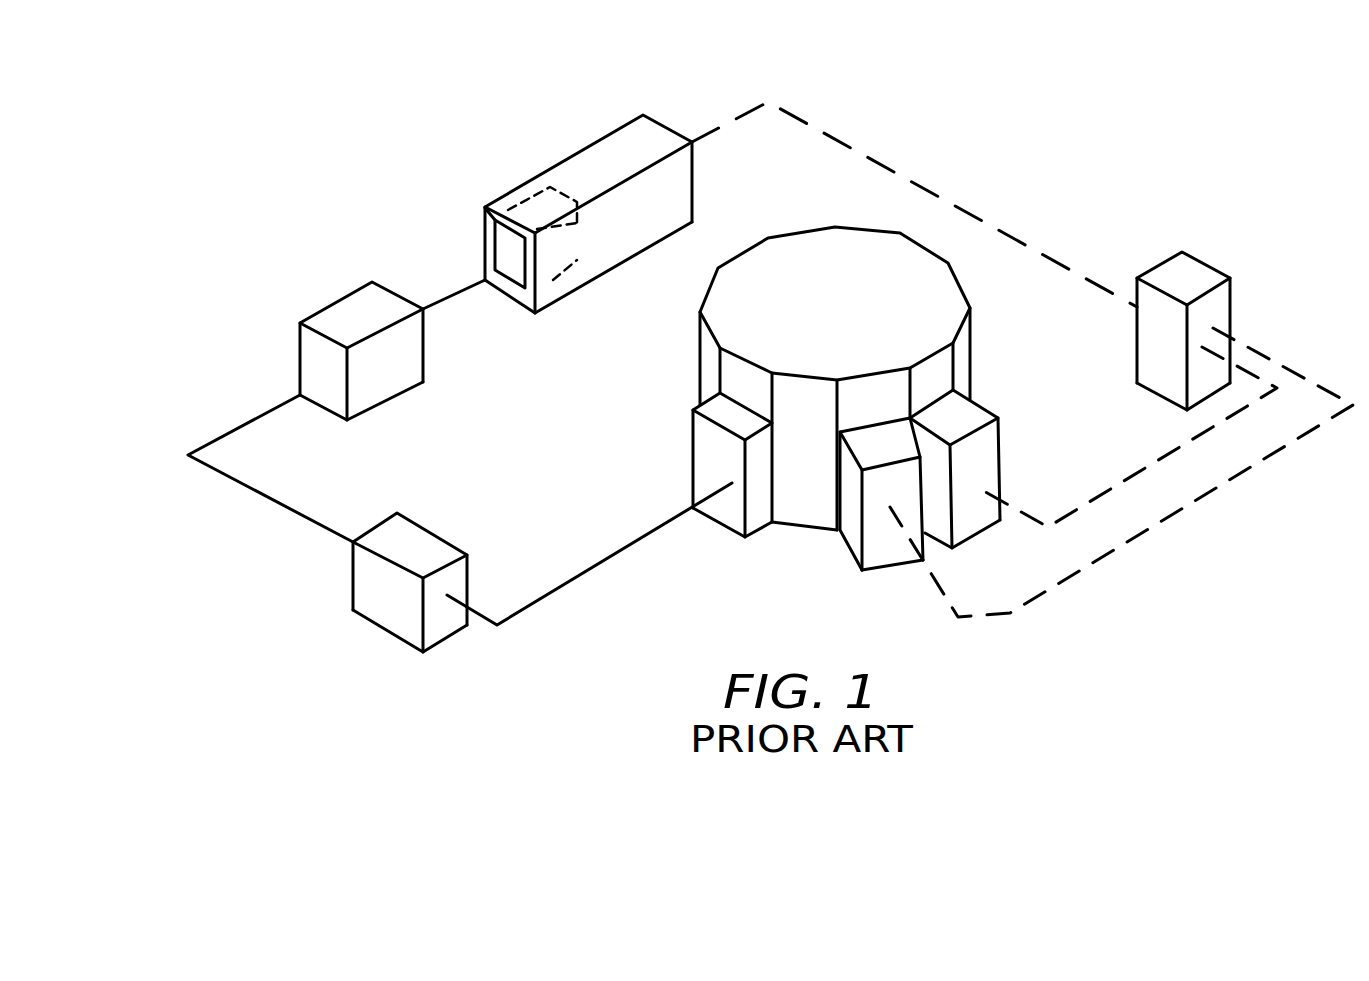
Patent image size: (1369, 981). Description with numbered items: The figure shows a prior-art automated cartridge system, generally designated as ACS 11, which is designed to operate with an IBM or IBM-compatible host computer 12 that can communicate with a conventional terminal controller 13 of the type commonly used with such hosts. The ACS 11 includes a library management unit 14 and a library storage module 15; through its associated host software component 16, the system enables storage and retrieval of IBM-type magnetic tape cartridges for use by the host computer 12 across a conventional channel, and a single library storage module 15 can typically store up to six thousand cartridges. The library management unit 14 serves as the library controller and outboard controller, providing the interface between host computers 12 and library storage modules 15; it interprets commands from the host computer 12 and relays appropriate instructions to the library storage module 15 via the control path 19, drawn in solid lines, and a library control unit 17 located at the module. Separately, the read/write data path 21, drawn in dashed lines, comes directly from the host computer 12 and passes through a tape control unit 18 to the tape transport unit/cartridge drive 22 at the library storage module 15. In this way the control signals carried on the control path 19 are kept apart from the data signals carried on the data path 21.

The automated cartridge system 11 is at (876, 106).
The host computer 12 is at (622, 150).
The terminal controller 13 is at (352, 318).
The library management unit 14 is at (390, 602).
The library storage module 15 is at (887, 258).
The host software component 16 is at (527, 210).
The library control unit 17 is at (730, 507).
The tape control unit 18 is at (1187, 273).
The control path 19 is at (542, 600).
The read/write data path 21 is at (1027, 243).
The tape transport unit/cartridge drive 22 is at (853, 533).